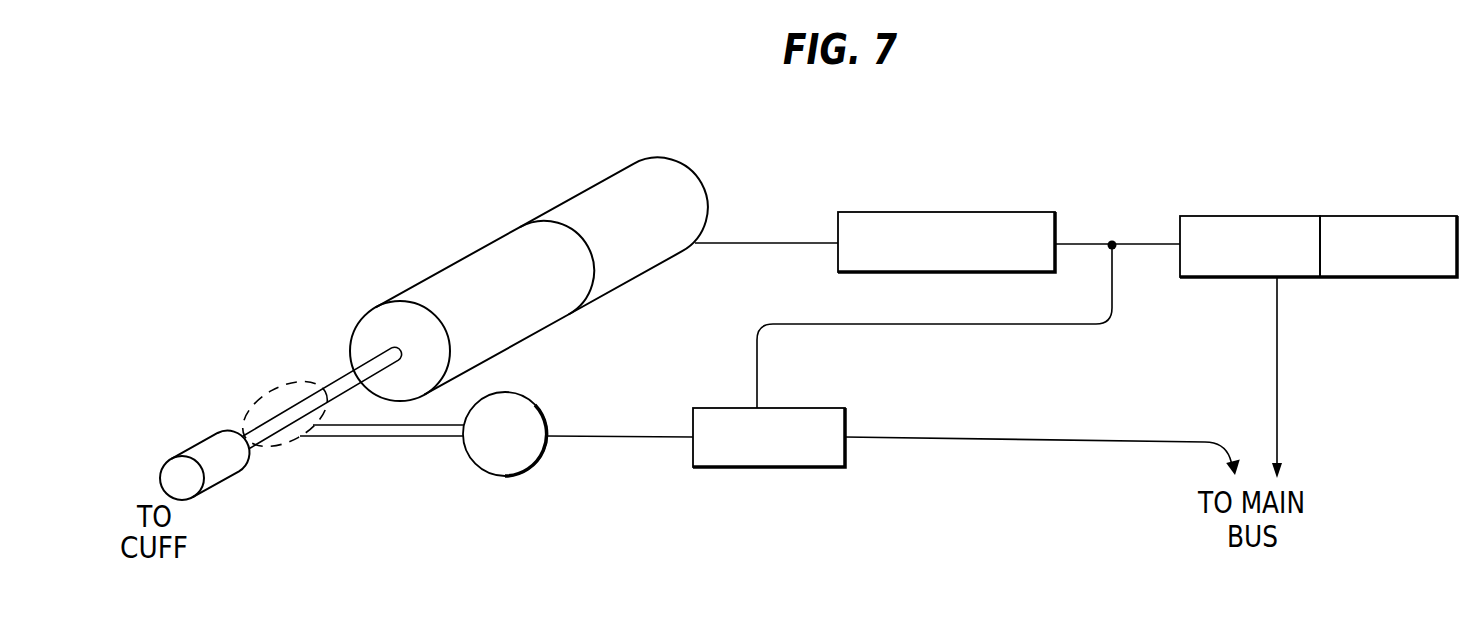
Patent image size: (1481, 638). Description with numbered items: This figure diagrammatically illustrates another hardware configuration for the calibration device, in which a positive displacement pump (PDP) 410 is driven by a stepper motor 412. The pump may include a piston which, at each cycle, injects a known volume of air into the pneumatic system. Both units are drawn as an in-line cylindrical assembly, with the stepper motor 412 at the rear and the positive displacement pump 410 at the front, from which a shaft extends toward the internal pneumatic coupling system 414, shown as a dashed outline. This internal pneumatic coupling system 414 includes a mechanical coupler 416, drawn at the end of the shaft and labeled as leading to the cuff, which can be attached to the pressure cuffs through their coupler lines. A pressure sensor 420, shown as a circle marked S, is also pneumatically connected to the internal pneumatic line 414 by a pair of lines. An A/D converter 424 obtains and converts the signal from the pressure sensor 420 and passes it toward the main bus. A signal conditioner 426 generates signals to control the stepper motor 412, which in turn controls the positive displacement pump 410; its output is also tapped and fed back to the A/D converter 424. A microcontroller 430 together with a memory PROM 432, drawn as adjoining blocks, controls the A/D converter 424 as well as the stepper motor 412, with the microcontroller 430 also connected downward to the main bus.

The positive displacement pump 410 is at (457, 277).
The stepper motor 412 is at (578, 215).
The internal pneumatic coupling system 414 is at (276, 392).
The mechanical coupler 416 is at (205, 450).
The pressure sensor 420 is at (530, 398).
The A/D converter 424 is at (778, 408).
The signal conditioner 426 is at (960, 212).
The microcontroller 430 is at (1227, 215).
The memory PROM 432 is at (1368, 218).